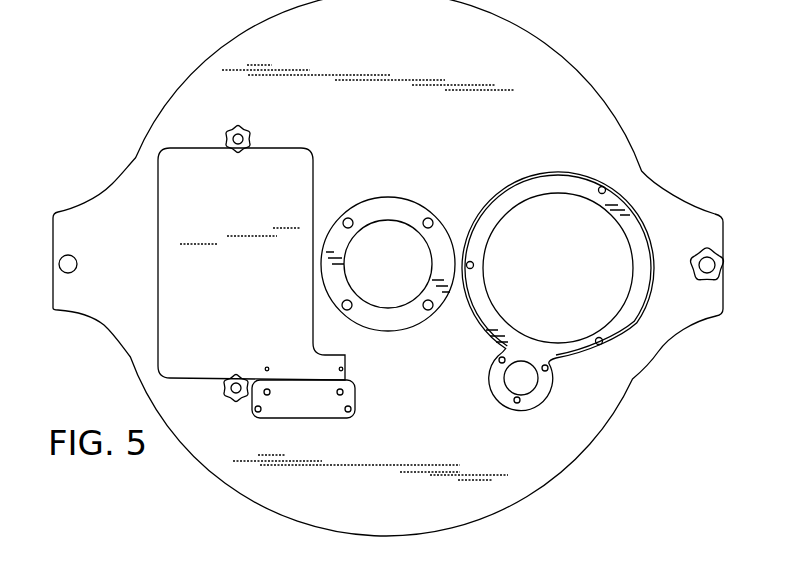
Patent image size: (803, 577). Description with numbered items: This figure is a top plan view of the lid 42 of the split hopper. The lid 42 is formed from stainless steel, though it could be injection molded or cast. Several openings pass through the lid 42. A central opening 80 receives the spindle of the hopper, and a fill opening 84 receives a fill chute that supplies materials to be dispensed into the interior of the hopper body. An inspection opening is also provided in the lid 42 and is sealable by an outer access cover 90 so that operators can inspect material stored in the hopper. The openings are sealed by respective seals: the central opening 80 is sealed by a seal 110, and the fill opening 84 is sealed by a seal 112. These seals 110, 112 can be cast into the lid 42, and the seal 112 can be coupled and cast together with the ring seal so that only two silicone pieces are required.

The lid 42 is at (603, 54).
The outer access cover 90 is at (295, 158).
The seal 110 is at (392, 212).
The central opening 80 is at (388, 308).
The seal 112 is at (586, 183).
The fill opening 84 is at (557, 192).